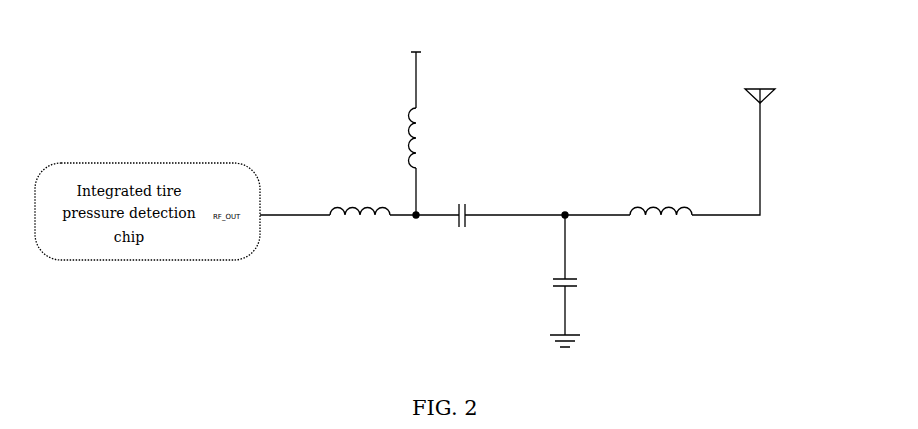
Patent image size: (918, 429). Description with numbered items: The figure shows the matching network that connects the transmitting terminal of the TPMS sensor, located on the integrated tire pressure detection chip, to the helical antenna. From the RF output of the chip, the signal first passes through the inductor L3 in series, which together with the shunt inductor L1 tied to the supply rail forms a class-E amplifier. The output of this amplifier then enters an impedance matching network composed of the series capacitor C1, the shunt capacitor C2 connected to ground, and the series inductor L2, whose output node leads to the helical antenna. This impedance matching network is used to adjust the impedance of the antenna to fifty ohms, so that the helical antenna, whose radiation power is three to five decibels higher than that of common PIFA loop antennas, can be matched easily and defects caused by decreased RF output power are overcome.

The inductor L1 is at (428, 126).
The inductor L2 is at (661, 216).
The inductor L3 is at (360, 218).
The capacitor C1 is at (466, 219).
The capacitor C2 is at (580, 281).